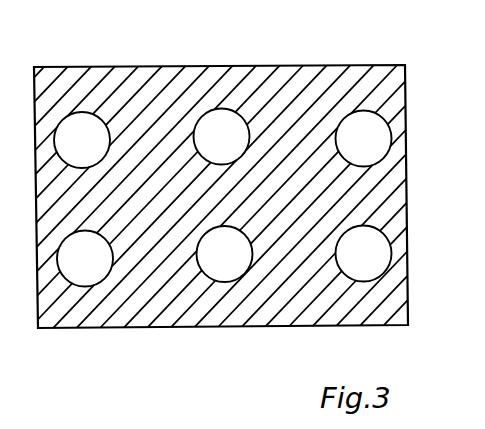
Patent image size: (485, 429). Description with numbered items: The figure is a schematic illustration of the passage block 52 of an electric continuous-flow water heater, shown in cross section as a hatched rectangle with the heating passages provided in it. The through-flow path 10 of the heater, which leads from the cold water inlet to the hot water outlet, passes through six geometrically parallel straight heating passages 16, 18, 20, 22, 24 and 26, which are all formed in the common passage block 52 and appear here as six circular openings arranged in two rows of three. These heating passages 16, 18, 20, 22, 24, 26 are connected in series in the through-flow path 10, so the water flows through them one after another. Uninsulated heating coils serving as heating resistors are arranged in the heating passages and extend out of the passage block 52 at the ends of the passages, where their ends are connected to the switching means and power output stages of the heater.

The through-flow path 10 is at (415, 202).
The passage block 52 is at (151, 117).
The heating passage 16 is at (353, 133).
The heating passage 18 is at (356, 257).
The heating passage 20 is at (223, 263).
The heating passage 22 is at (218, 133).
The heating passage 24 is at (87, 262).
The heating passage 26 is at (82, 130).